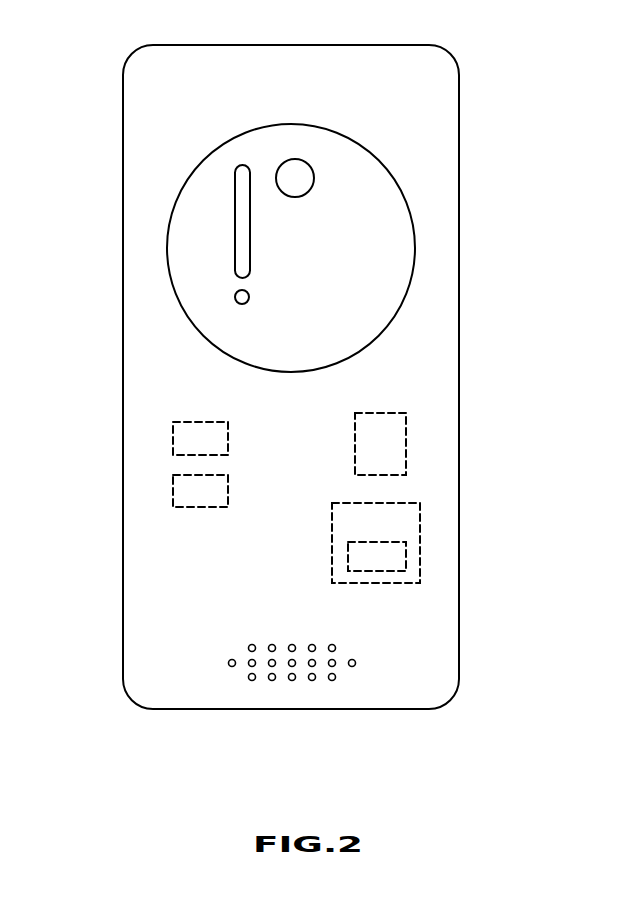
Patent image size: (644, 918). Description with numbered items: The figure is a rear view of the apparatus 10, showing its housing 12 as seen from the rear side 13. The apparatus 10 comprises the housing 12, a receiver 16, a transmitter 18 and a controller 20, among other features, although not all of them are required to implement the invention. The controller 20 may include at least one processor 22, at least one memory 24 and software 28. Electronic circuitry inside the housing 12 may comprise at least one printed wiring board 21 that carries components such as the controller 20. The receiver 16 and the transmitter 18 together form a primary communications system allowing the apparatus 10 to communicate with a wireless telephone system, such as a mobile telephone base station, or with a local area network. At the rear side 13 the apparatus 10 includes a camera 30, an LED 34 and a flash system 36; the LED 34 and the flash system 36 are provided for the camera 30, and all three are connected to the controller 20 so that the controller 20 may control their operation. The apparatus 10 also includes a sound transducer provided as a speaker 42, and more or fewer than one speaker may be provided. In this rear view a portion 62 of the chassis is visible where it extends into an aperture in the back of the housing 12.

The apparatus 10 is at (563, 95).
The housing 12 is at (440, 345).
The rear side 13 is at (440, 291).
The receiver 16 is at (173, 445).
The transmitter 18 is at (173, 490).
The controller 20 is at (175, 574).
The printed wiring board 21 is at (432, 478).
The processor 22 is at (405, 432).
The memory 24 is at (420, 540).
The software 28 is at (404, 553).
The camera 30 is at (295, 177).
The LED 34 is at (236, 302).
The flash system 36 is at (243, 225).
The speaker 42 is at (293, 665).
The portion of the chassis 62 is at (372, 245).